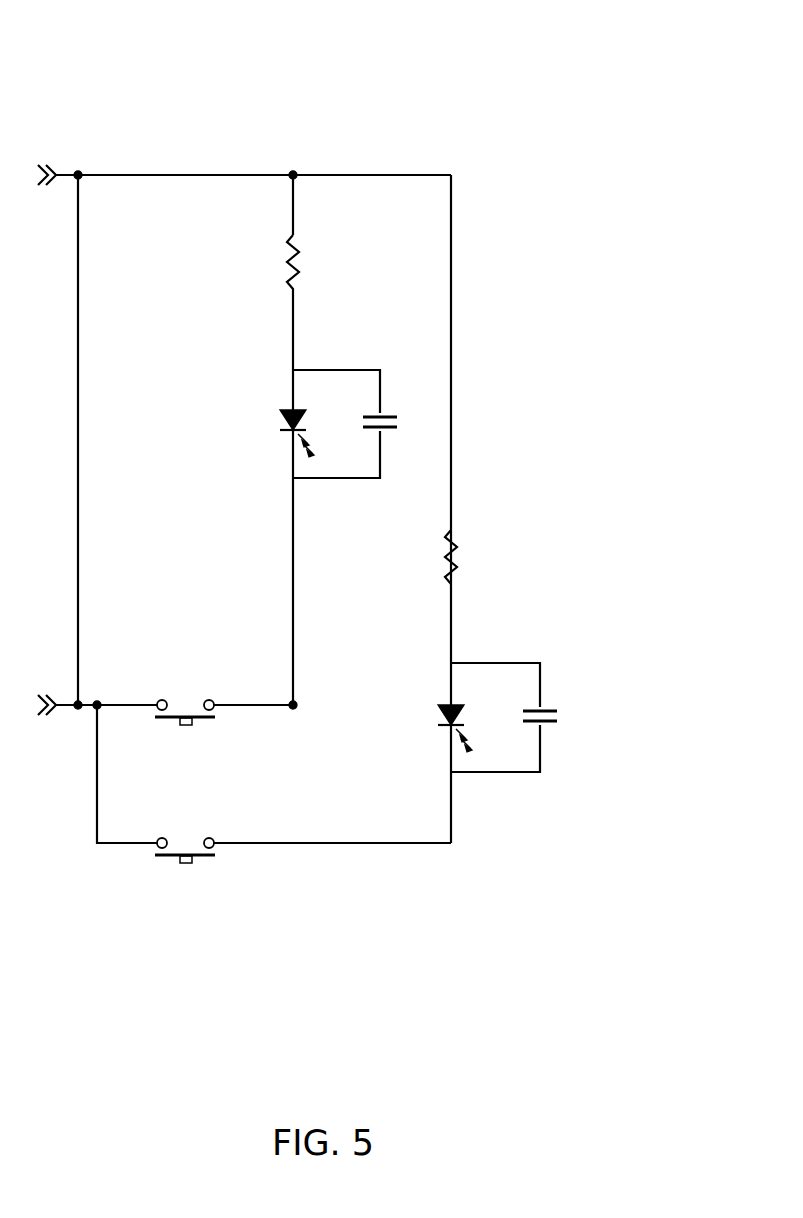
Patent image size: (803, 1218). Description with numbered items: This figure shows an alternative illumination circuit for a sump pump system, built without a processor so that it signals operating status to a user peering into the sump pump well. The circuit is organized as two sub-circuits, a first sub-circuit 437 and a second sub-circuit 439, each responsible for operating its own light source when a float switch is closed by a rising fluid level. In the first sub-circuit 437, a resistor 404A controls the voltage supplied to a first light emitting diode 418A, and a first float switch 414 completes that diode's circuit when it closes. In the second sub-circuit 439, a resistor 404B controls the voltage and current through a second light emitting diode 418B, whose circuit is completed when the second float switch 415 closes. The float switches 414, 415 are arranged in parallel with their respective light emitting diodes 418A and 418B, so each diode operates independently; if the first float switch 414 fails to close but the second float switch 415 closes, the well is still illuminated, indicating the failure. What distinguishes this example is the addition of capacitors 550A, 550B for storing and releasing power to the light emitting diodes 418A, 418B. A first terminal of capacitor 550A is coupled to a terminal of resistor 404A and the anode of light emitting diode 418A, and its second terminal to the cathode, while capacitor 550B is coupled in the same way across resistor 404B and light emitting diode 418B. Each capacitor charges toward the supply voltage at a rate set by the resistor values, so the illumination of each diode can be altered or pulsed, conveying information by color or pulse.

The first sub-circuit 437 is at (241, 158).
The second sub-circuit 439 is at (468, 873).
The resistor 404A is at (291, 250).
The resistor 404B is at (455, 540).
The first light emitting diode 418A is at (282, 411).
The second light emitting diode 418B is at (438, 712).
The capacitor 550A is at (398, 402).
The capacitor 550B is at (558, 712).
The first float switch 414 is at (172, 726).
The second float switch 415 is at (162, 862).